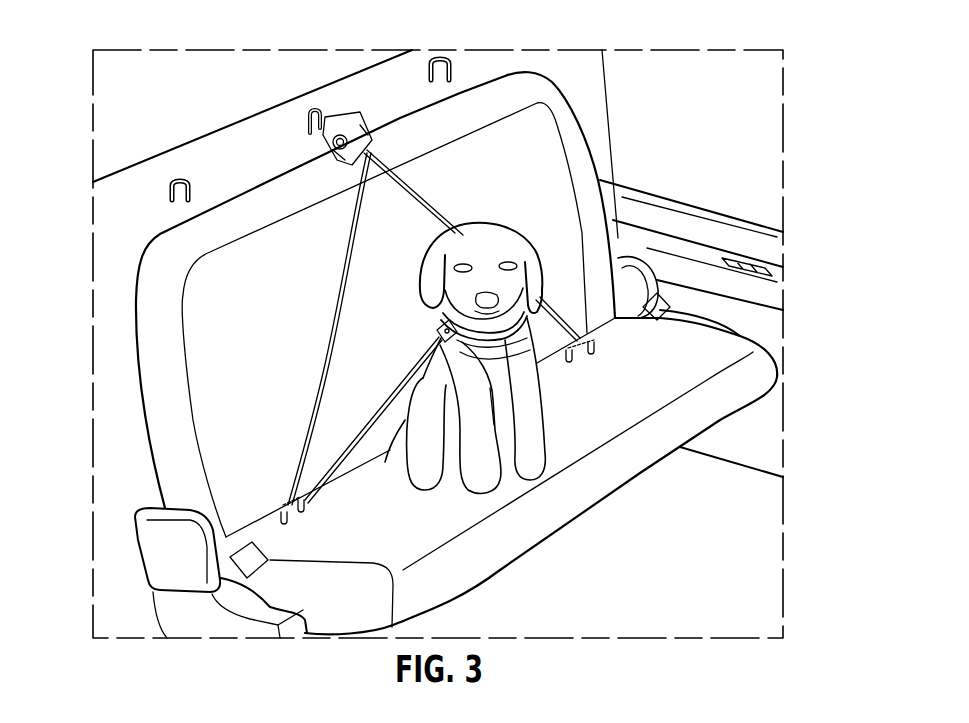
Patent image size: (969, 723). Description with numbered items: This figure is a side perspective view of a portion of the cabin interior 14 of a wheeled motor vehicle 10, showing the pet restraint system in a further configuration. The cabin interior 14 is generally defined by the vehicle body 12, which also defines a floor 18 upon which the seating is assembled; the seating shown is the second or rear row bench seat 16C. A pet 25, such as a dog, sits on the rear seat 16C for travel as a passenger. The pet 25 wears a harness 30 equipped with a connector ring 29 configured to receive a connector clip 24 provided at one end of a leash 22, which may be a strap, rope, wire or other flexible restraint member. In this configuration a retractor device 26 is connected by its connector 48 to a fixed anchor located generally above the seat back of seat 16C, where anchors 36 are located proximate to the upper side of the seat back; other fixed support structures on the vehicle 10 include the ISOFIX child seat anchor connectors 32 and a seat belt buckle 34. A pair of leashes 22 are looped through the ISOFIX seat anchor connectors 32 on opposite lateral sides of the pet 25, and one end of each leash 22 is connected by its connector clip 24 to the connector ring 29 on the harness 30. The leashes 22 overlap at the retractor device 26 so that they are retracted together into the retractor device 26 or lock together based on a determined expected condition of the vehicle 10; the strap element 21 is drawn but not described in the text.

The wheeled motor vehicle 10 is at (836, 50).
The vehicle body 12 is at (612, 105).
The cabin interior 14 is at (668, 104).
The rear seat 16C is at (170, 252).
The floor 18 is at (735, 573).
The strap 21 is at (277, 442).
The leash 22 is at (320, 393).
The connector clip 24 is at (436, 337).
The pet 25 is at (544, 220).
The retractor device 26 is at (362, 146).
The connector ring 29 is at (446, 323).
The harness 30 is at (507, 378).
The child seat anchor 32 is at (281, 507).
The seat belt buckle 34 is at (233, 555).
The anchors 36 is at (173, 180).
The connector 48 is at (330, 117).